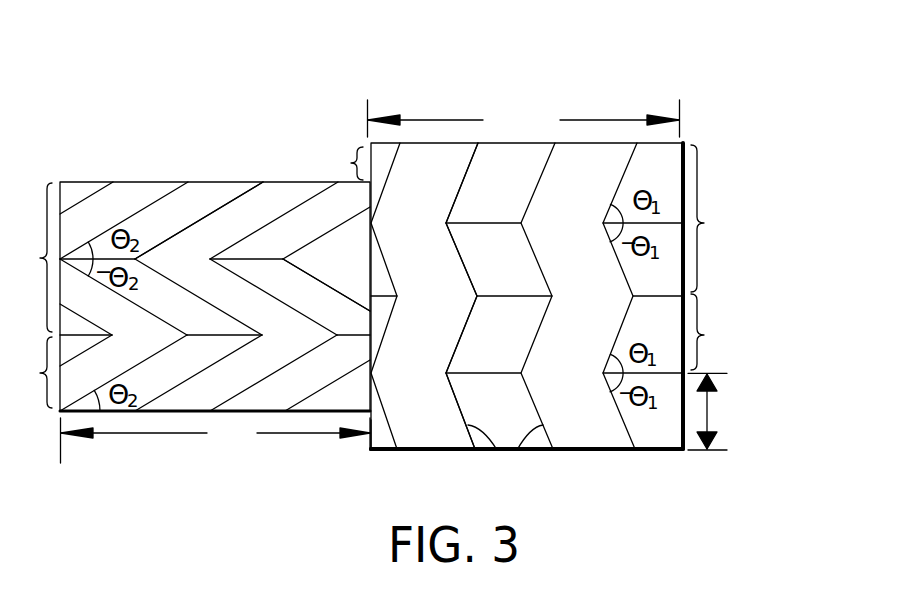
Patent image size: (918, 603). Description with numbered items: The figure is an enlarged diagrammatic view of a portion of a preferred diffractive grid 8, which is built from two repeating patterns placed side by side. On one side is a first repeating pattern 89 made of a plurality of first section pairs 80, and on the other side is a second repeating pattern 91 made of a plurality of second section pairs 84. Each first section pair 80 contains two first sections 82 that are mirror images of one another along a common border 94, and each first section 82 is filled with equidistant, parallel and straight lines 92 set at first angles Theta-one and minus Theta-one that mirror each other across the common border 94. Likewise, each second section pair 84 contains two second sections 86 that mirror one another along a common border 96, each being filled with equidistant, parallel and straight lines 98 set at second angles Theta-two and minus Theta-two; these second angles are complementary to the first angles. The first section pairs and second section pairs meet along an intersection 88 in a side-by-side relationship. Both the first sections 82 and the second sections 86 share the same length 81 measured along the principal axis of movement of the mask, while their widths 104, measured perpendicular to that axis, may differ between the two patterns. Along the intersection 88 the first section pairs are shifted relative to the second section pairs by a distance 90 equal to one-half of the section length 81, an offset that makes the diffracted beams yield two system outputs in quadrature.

The diffractive grid 8 is at (766, 62).
The second repeating pattern 91 is at (200, 78).
The first repeating pattern 89 is at (553, 62).
The widths 104 is at (370, 281).
The straight lines 98 is at (175, 192).
The common border 96 is at (268, 261).
The common border 94 is at (498, 224).
The straight lines 92 is at (515, 452).
The intersection 88 is at (373, 452).
The distance 90 is at (341, 163).
The first section pair 80 is at (714, 218).
The first section 82 is at (715, 332).
The length 81 is at (726, 411).
The second section pair 84 is at (29, 257).
The second section 86 is at (30, 372).